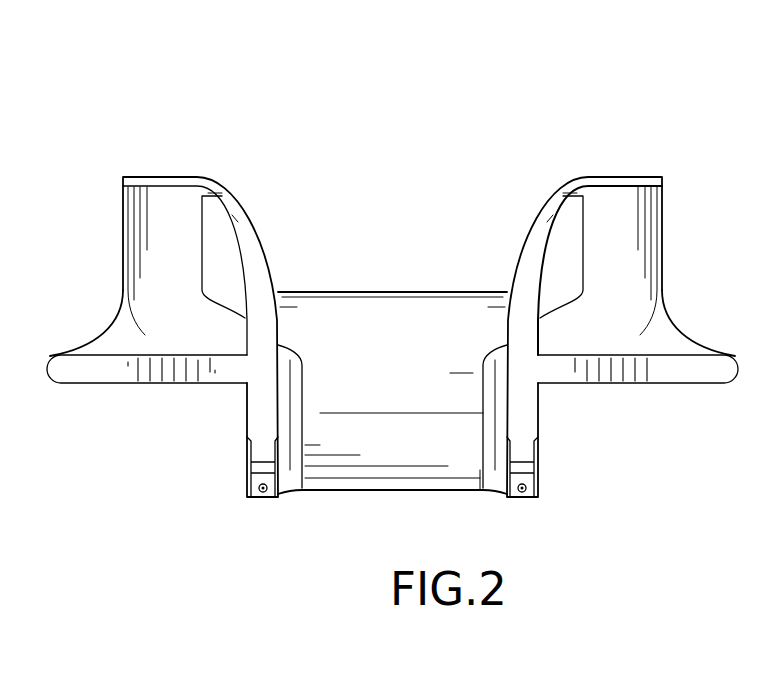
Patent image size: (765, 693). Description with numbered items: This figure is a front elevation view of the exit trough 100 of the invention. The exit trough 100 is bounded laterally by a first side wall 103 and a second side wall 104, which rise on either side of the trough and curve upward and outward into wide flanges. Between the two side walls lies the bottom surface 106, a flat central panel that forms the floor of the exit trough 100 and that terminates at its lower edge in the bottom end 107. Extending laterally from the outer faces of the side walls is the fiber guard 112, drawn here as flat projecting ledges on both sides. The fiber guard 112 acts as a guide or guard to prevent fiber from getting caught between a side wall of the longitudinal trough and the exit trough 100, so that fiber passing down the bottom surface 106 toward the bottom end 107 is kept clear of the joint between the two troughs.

The exit trough 100 is at (481, 149).
The first side wall 103 is at (517, 256).
The second side wall 104 is at (266, 246).
The bottom surface 106 is at (407, 344).
The bottom end 107 is at (387, 492).
The fiber guard 112 is at (95, 371).